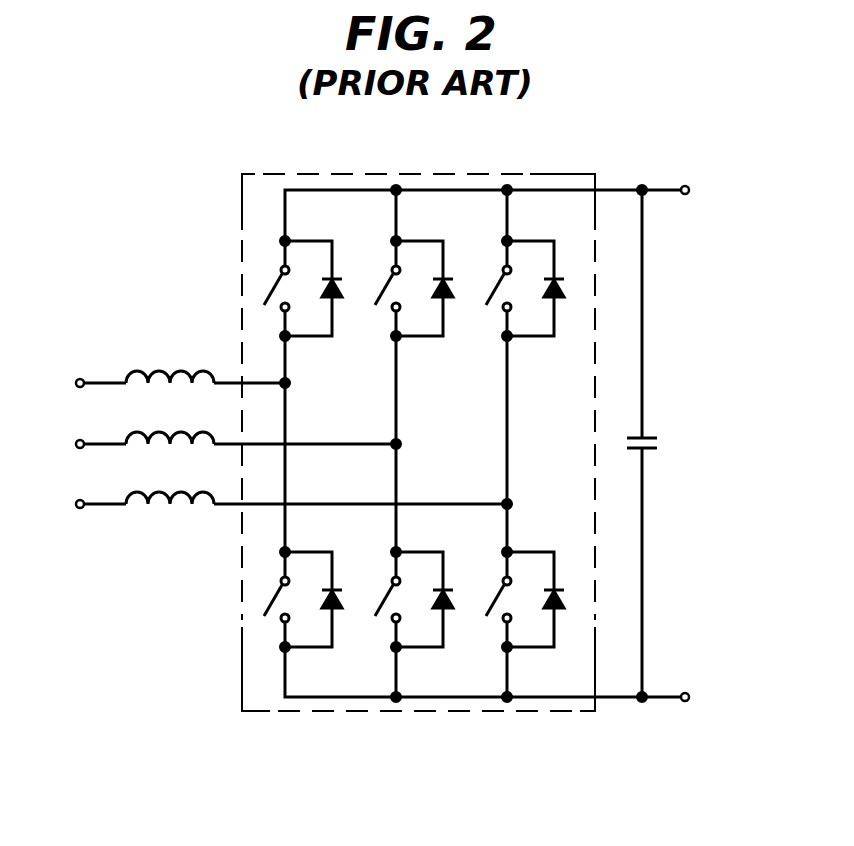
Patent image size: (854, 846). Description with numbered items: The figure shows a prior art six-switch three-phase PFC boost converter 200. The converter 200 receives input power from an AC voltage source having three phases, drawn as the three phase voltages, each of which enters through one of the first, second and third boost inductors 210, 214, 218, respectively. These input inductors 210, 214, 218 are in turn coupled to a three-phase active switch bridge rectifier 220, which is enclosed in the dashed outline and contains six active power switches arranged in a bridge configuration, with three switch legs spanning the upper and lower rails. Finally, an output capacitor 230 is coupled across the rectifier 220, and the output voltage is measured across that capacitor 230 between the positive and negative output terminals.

The six-switch three-phase PFC boost converter 200 is at (193, 208).
The first boost inductor 210 is at (142, 370).
The second boost inductor 214 is at (142, 431).
The third boost inductor 218 is at (142, 491).
The three-phase active switch bridge rectifier 220 is at (572, 174).
The output capacitor 230 is at (652, 450).